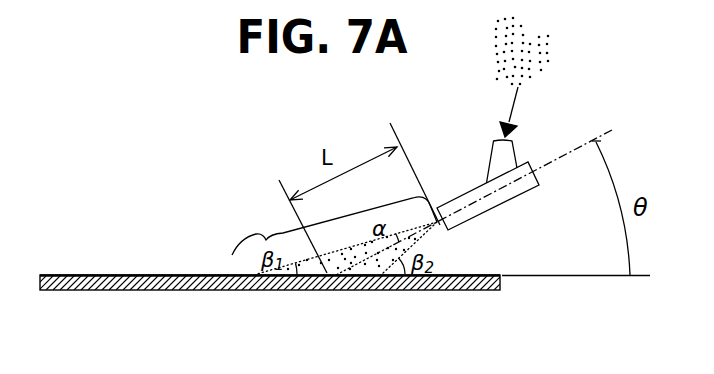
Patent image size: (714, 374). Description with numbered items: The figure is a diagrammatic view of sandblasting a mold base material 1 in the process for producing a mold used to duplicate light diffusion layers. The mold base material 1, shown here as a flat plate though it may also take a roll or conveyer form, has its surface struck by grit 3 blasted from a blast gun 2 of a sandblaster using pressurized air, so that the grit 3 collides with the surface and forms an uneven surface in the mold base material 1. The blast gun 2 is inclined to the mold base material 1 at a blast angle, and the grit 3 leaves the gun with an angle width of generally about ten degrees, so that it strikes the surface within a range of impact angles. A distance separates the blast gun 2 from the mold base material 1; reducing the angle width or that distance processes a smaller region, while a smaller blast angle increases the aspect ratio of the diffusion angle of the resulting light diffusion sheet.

The mold base material 1 is at (483, 290).
The blast gun 2 is at (527, 190).
The grit 3 is at (548, 44).